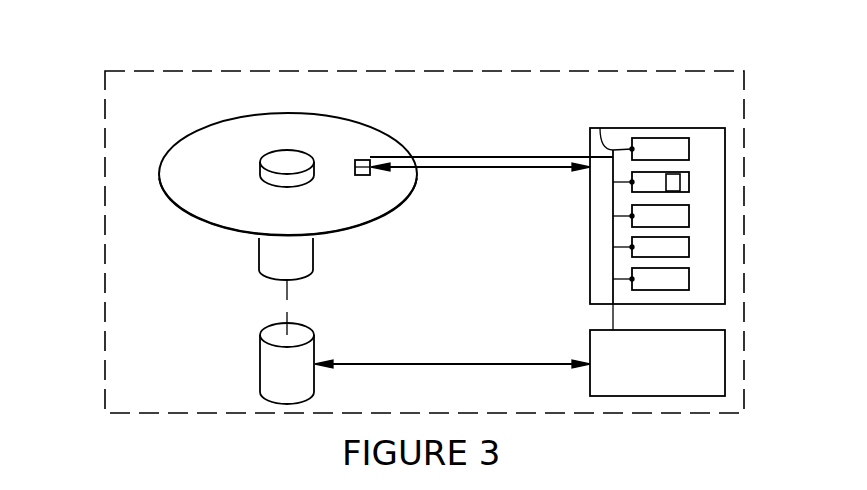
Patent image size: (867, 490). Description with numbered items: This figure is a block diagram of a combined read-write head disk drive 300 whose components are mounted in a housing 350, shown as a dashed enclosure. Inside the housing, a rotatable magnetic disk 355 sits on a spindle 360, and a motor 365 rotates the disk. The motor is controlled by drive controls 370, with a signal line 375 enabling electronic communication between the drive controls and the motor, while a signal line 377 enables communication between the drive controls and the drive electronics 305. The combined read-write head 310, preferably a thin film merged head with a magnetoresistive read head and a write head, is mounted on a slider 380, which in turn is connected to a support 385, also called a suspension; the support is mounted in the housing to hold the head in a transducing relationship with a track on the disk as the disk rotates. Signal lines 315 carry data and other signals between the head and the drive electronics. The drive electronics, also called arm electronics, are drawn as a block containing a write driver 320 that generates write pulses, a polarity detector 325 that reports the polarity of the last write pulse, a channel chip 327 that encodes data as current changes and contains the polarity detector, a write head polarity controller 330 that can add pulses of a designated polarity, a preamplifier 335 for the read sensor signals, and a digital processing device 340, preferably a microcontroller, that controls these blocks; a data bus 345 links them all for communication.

The combined read-write head disk drive 300 is at (472, 64).
The drive electronics 305 is at (678, 126).
The combined read-write head 310 is at (356, 173).
The signal lines 315 is at (480, 157).
The write driver 320 is at (689, 149).
The polarity detector 325 is at (689, 172).
The channel chip 327 is at (683, 185).
The write head polarity controller 330 is at (689, 216).
The preamplifier 335 is at (689, 247).
The digital processing device 340 is at (689, 279).
The data bus 345 is at (600, 128).
The housing 350 is at (103, 292).
The rotatable magnetic disk 355 is at (178, 152).
The spindle 360 is at (258, 260).
The motor 365 is at (287, 404).
The drive controls 370 is at (725, 358).
The signal line 375 is at (492, 364).
The signal line 377 is at (613, 316).
The slider 380 is at (370, 160).
The support 385 is at (440, 157).